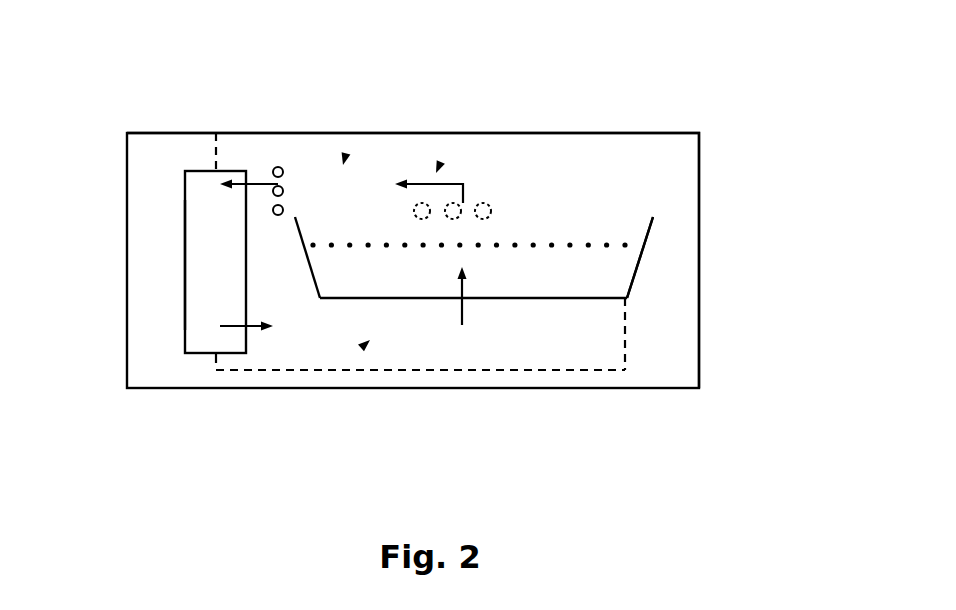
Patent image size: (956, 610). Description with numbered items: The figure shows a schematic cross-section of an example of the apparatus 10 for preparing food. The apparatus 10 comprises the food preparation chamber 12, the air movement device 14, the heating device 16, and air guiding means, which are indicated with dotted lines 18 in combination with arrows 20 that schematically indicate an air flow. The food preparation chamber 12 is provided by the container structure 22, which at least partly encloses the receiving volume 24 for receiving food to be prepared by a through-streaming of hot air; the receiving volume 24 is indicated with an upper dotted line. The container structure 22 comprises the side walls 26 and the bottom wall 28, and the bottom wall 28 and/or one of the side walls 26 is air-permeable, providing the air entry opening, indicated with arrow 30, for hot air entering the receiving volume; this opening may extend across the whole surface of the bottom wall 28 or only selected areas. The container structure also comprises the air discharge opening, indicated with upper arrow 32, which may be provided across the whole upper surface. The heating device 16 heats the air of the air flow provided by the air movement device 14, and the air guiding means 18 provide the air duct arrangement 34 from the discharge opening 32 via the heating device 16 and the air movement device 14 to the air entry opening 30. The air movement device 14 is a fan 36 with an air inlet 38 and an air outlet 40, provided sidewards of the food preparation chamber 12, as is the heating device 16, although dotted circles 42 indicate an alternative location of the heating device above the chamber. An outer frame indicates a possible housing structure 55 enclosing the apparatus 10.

The apparatus for preparing food 10 is at (759, 154).
The food preparation chamber 12 is at (640, 200).
The air movement device 14 is at (181, 214).
The heating device 16 is at (280, 167).
The air guiding means 18 is at (214, 152).
The arrows 20 is at (438, 168).
The container structure 22 is at (652, 242).
The receiving volume 24 is at (570, 244).
The side walls 26 is at (308, 268).
The bottom wall 28 is at (548, 298).
The air entry opening 30 is at (462, 325).
The air discharge opening 32 is at (464, 193).
The air duct arrangement 34 is at (344, 160).
The fan 36 is at (185, 255).
The air inlet 38 is at (250, 182).
The air outlet 40 is at (250, 332).
The dotted circles 42 is at (491, 210).
The housing structure 55 is at (628, 390).